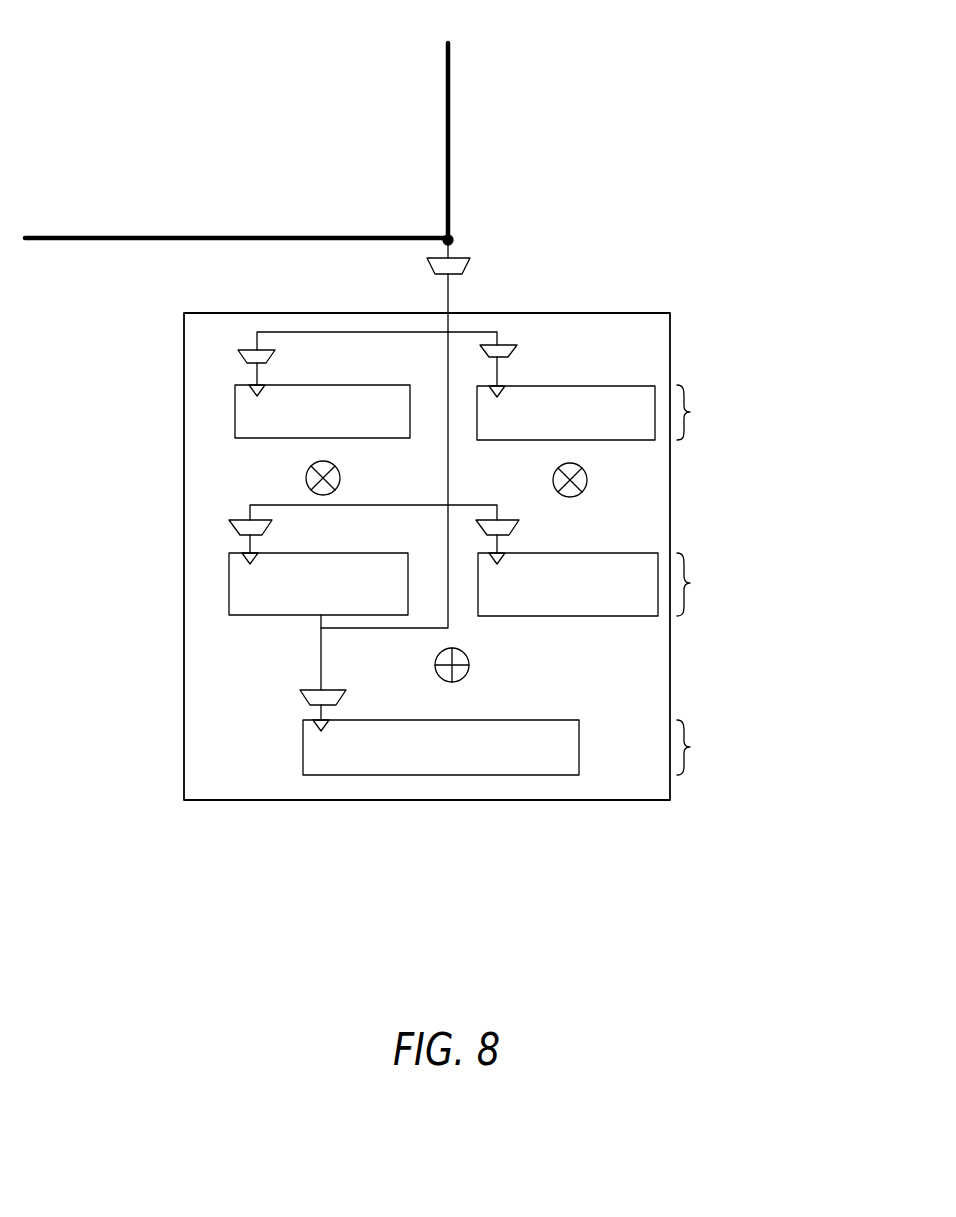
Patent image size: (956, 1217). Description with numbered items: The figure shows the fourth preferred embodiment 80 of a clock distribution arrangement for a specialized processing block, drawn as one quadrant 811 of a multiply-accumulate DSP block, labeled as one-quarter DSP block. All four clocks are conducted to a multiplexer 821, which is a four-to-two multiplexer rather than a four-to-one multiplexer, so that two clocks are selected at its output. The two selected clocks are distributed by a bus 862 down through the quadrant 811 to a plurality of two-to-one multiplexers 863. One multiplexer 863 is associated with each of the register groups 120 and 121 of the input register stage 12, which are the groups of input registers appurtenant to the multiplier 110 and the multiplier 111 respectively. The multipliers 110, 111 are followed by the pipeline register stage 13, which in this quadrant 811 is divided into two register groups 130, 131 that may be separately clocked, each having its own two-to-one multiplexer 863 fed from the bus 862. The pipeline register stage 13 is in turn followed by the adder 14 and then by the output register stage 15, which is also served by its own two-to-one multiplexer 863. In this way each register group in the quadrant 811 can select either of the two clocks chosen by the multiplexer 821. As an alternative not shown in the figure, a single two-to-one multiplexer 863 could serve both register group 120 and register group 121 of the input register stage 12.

The fourth preferred embodiment 80 is at (706, 819).
The quadrant 811 is at (640, 800).
The multiplexer 821 is at (427, 266).
The bus 862 is at (447, 380).
The 2:1 multiplexer 863 is at (238, 360).
The input register stage 12 is at (694, 412).
The pipeline register stage 13 is at (694, 584).
The output register stage 15 is at (507, 747).
The adder 14 is at (469, 665).
The multiplier 110 is at (335, 466).
The multiplier 111 is at (585, 469).
The group of registers 120 is at (235, 414).
The group of registers 121 is at (477, 428).
The register group 130 is at (229, 585).
The register group 131 is at (542, 616).